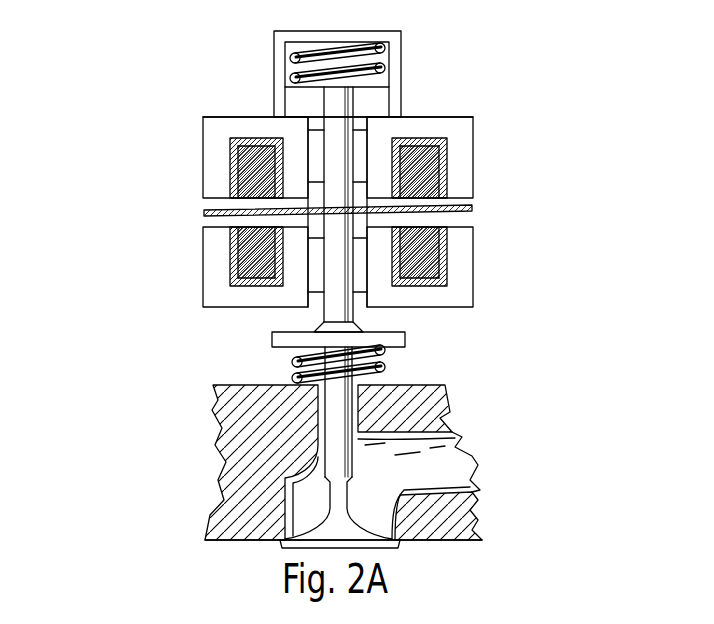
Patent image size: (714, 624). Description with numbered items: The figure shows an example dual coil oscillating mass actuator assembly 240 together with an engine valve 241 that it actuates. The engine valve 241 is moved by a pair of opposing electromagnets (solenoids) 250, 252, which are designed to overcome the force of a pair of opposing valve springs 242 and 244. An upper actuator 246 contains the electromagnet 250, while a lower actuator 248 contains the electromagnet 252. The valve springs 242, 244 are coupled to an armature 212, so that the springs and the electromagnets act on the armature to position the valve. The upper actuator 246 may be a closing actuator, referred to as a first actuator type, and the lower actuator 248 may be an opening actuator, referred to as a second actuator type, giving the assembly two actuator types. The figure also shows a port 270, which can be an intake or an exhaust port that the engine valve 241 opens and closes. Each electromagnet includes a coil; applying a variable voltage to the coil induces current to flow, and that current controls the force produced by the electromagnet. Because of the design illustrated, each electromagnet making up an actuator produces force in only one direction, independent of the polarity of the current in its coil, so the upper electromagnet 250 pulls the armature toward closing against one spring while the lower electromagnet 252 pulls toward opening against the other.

The engine valve 241 is at (102, 335).
The valve spring 242 is at (360, 50).
The upper actuator 246 is at (526, 166).
The electromagnet 250 is at (465, 137).
The dual coil oscillating mass actuator assembly 240 is at (540, 226).
The lower actuator 248 is at (534, 264).
The electromagnet 252 is at (465, 292).
The valve spring 244 is at (385, 368).
The armature 212 is at (343, 501).
The port 270 is at (458, 470).